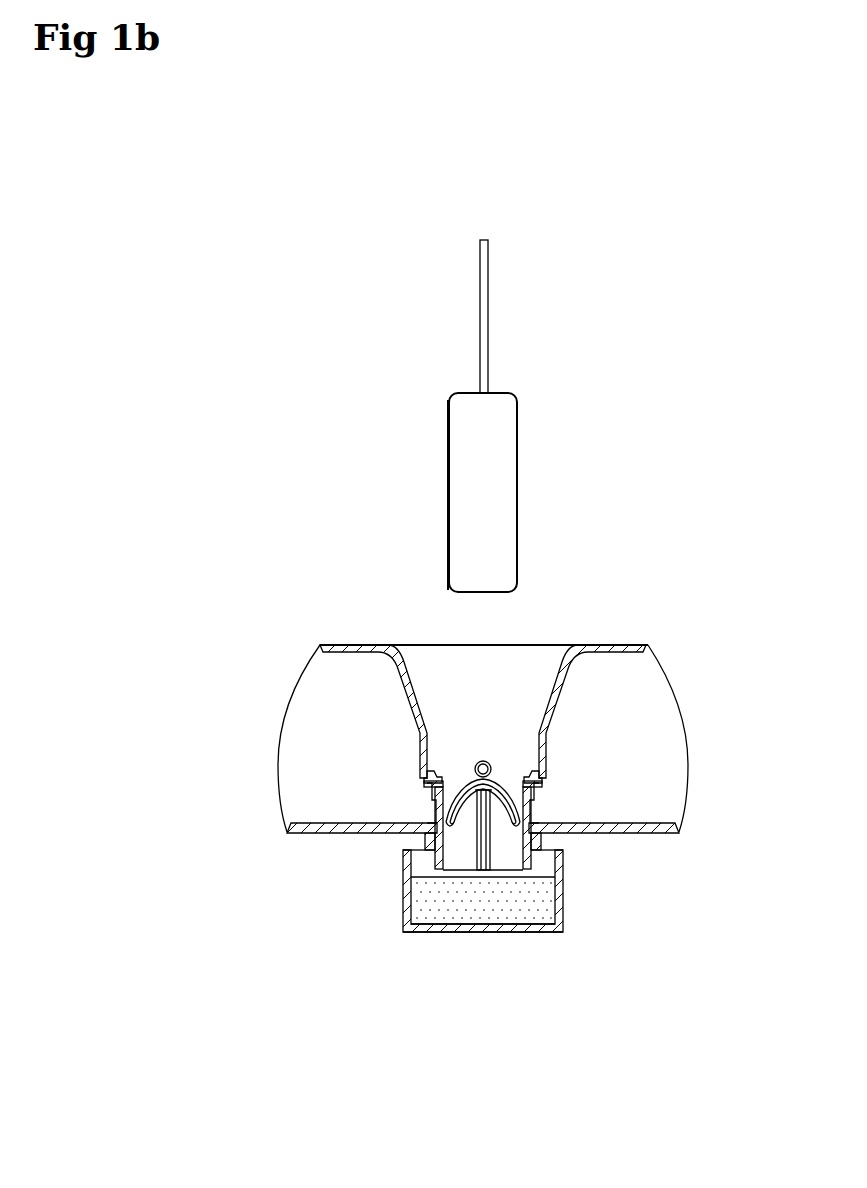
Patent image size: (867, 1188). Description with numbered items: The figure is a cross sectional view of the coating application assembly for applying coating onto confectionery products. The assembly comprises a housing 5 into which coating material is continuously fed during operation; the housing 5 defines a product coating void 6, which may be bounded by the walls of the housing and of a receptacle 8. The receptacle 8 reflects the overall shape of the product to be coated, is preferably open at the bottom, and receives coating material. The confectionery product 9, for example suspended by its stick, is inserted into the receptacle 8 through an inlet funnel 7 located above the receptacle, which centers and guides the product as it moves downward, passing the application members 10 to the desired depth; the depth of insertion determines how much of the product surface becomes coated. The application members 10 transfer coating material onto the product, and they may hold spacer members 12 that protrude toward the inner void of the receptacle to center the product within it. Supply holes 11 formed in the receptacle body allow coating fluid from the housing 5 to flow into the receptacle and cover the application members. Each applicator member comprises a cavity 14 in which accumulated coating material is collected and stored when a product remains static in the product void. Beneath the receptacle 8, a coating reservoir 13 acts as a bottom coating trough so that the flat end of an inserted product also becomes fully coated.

The housing 5 is at (303, 703).
The product coating void 6 is at (416, 638).
The inlet funnel 7 is at (560, 704).
The receptacle 8 is at (435, 776).
The confectionery product 9 is at (526, 495).
The application member 10 is at (529, 864).
The supply hole 11 is at (551, 777).
The spacer member 12 is at (471, 856).
The coating reservoir 13 is at (455, 935).
The cavity 14 is at (522, 803).